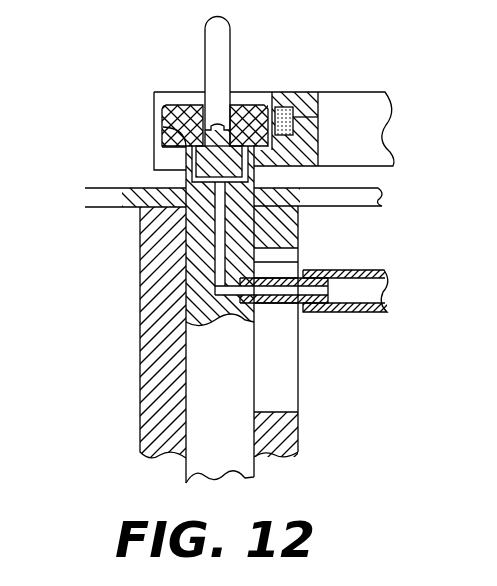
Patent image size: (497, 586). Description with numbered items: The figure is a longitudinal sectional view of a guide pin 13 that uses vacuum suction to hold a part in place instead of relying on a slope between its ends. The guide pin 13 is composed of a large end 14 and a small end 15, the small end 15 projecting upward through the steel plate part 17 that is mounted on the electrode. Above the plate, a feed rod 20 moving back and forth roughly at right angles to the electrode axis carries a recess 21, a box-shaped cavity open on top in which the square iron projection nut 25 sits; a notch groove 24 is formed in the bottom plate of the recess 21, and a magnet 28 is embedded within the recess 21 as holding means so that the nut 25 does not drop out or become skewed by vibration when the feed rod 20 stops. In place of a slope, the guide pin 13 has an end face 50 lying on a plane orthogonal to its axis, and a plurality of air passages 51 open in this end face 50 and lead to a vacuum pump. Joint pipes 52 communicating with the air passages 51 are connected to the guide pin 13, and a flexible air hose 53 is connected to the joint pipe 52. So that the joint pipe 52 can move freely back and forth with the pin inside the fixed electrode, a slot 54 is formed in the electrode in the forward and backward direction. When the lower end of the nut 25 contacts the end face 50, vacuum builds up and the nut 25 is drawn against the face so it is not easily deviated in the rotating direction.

The guide pin 13 is at (178, 412).
The large end 14 is at (153, 374).
The small end 15 is at (203, 40).
The steel plate part 17 is at (364, 207).
The feed rod 20 is at (365, 92).
The recess 21 is at (250, 92).
The notch groove 24 is at (158, 163).
The projection nut 25 is at (182, 104).
The magnet 28 is at (320, 119).
The end face 50 is at (162, 127).
The air passages 51 is at (186, 176).
The joint pipe 52 is at (278, 305).
The flexible air hose 53 is at (372, 310).
The slot 54 is at (285, 412).